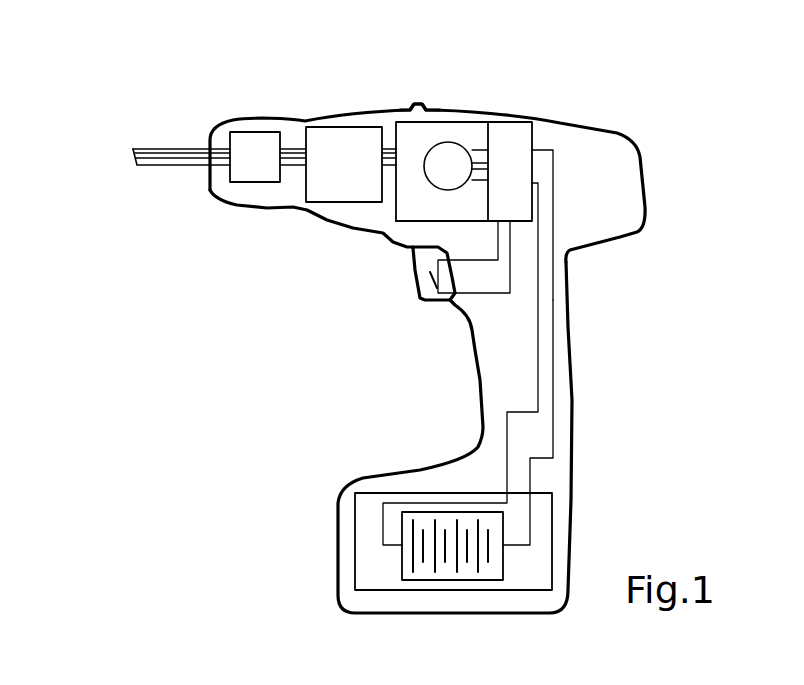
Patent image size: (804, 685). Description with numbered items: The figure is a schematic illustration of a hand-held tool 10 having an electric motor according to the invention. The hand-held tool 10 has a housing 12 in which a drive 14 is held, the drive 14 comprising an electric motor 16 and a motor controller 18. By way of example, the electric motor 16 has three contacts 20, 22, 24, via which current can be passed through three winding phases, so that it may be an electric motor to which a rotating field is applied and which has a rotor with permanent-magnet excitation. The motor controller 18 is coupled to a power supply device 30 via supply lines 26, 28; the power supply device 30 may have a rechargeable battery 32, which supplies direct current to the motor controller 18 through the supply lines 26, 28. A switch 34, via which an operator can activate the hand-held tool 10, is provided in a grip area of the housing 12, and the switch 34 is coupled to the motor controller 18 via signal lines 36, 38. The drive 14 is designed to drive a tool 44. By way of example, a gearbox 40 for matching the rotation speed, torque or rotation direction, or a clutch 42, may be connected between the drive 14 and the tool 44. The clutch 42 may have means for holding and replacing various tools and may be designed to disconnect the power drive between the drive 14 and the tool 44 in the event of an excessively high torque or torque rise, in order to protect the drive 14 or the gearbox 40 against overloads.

The hand-held tool 10 is at (248, 318).
The housing 12 is at (613, 238).
The drive 14 is at (441, 120).
The electric motor 16 is at (423, 152).
The motor controller 18 is at (553, 150).
The contact 20 is at (478, 150).
The contact 22 is at (490, 152).
The contact 24 is at (470, 190).
The supply line 26 is at (507, 463).
The supply line 28 is at (553, 433).
The power supply device 30 is at (387, 593).
The rechargeable battery 32 is at (475, 593).
The switch 34 is at (422, 282).
The signal line 36 is at (480, 255).
The signal line 38 is at (470, 330).
The gearbox 40 is at (330, 127).
The clutch 42 is at (256, 133).
The tool 44 is at (171, 149).